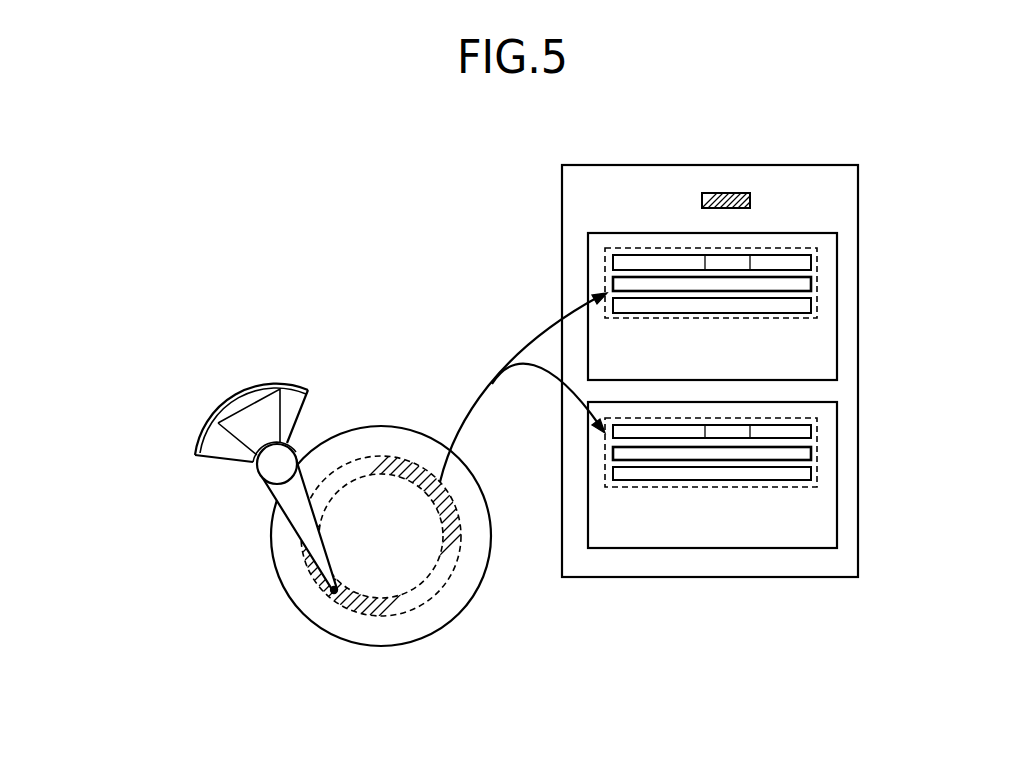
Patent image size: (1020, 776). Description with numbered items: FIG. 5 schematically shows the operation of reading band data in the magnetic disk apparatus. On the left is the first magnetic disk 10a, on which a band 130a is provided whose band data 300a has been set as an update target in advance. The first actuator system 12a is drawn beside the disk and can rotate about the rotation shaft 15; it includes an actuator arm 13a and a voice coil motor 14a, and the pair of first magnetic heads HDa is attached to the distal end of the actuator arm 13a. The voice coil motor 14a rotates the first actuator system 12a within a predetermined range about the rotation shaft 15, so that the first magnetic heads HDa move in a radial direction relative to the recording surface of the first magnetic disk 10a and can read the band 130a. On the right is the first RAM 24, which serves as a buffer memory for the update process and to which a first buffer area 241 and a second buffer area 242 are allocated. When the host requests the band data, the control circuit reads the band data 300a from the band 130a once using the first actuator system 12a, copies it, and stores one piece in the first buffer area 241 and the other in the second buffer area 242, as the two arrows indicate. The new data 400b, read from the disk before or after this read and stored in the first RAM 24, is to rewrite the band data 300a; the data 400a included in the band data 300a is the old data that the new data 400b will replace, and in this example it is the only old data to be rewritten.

The first magnetic disk 10a is at (380, 647).
The band 130a is at (422, 605).
The first actuator system 12a is at (212, 487).
The voice coil motor 14a is at (237, 453).
The actuator arm 13a is at (293, 513).
The rotation shaft 15 is at (297, 455).
The first magnetic heads HDa is at (333, 589).
The first RAM 24 is at (814, 166).
The new data 400b is at (727, 193).
The first buffer area 241 is at (837, 260).
The second buffer area 242 is at (837, 430).
The band data 300a is at (817, 294).
The old data 400a is at (728, 255).